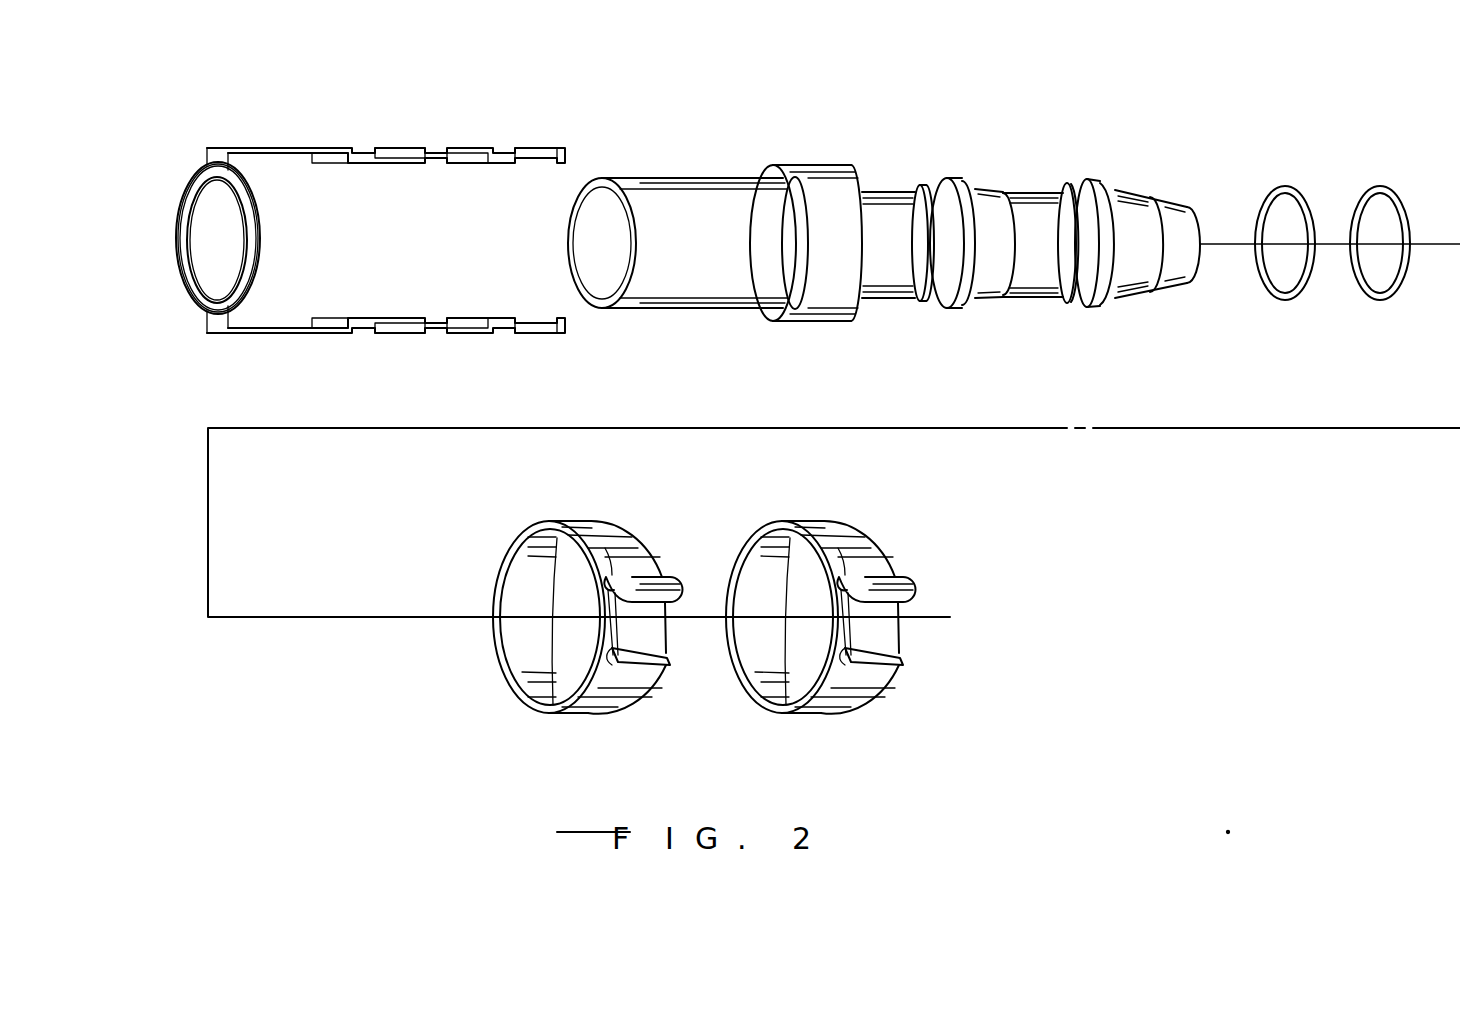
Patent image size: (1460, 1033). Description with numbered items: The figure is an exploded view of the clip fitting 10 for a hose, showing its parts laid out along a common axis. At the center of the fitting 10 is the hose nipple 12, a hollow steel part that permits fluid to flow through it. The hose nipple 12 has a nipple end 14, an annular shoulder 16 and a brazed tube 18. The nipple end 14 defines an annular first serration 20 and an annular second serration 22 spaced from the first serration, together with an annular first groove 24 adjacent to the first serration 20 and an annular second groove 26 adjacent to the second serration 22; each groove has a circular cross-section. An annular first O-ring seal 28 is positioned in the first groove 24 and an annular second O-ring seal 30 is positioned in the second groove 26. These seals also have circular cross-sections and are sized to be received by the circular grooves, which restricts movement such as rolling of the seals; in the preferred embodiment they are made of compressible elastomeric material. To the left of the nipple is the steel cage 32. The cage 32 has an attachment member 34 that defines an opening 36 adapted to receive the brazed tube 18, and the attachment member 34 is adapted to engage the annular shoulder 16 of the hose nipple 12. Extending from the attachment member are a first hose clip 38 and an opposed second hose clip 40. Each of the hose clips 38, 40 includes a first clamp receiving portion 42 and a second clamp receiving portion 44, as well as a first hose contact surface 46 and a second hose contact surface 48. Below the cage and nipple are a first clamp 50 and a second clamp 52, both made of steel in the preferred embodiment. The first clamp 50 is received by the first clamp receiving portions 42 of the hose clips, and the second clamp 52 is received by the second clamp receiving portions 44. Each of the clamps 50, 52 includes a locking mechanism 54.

The fitting 10 is at (882, 138).
The hose nipple 12 is at (838, 168).
The nipple end 14 is at (1148, 193).
The annular shoulder 16 is at (802, 163).
The brazed tube 18 is at (663, 193).
The first serration 20 is at (1080, 183).
The second serration 22 is at (940, 182).
The first groove 24 is at (1050, 184).
The second groove 26 is at (915, 185).
The first O-ring seal 28 is at (1383, 188).
The second O-ring seal 30 is at (1285, 188).
The cage 32 is at (210, 150).
The attachment member 34 is at (262, 237).
The opening 36 is at (200, 250).
The first hose clip 38 is at (282, 150).
The second hose clip 40 is at (283, 334).
The first clamp receiving portion 42 is at (500, 152).
The second clamp receiving portion 44 is at (364, 152).
The first hose contact surface 46 is at (517, 165).
The second hose contact surface 48 is at (403, 165).
The first clamp 50 is at (853, 522).
The second clamp 52 is at (617, 523).
The locking mechanism 54 is at (685, 582).